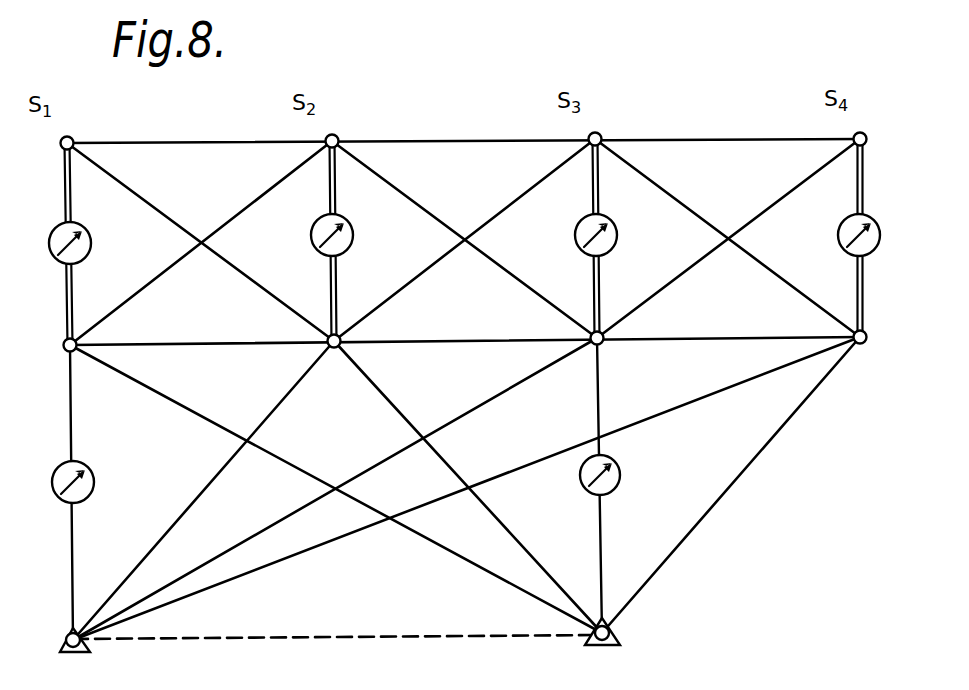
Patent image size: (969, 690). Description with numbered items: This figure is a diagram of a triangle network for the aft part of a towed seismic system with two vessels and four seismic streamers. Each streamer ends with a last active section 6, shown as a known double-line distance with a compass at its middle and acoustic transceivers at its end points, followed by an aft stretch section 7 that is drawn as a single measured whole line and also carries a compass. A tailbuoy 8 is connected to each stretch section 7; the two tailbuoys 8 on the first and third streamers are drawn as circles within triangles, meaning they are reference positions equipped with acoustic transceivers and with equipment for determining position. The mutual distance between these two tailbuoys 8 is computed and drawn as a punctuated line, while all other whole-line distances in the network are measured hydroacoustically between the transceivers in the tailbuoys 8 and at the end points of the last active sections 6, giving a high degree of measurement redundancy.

The last active section 6 is at (43, 287).
The aft stretch section 7 is at (635, 449).
The tailbuoy 8 is at (640, 625).